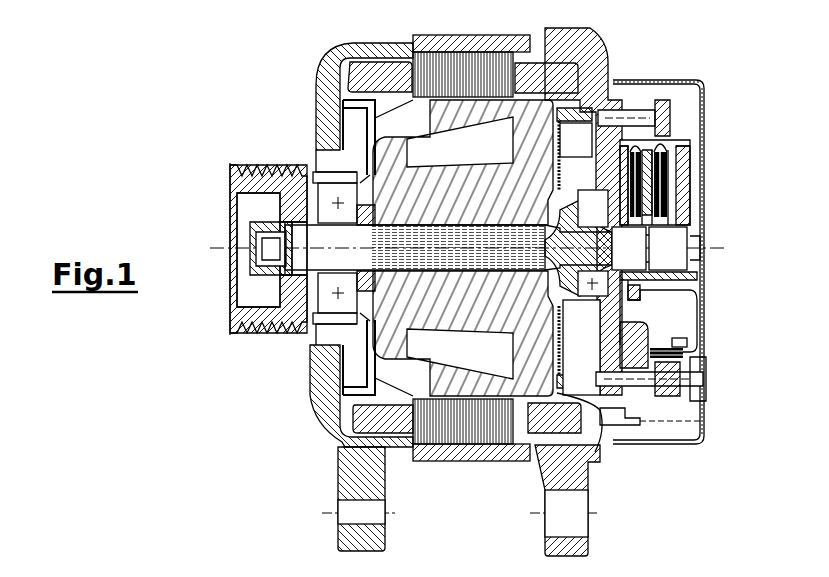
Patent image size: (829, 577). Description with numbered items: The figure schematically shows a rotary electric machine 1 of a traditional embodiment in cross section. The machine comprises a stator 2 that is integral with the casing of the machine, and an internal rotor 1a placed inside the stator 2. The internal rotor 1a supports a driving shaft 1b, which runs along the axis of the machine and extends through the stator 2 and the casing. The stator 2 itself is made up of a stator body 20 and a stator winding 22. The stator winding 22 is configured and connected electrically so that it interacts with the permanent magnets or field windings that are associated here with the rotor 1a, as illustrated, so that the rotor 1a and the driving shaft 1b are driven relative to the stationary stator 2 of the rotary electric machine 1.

The rotary electric machine 1 is at (308, 52).
The internal rotor 1a is at (473, 287).
The driving shaft 1b is at (413, 227).
The stator 2 is at (566, 295).
The stator body 20 is at (487, 413).
The stator winding 22 is at (575, 448).